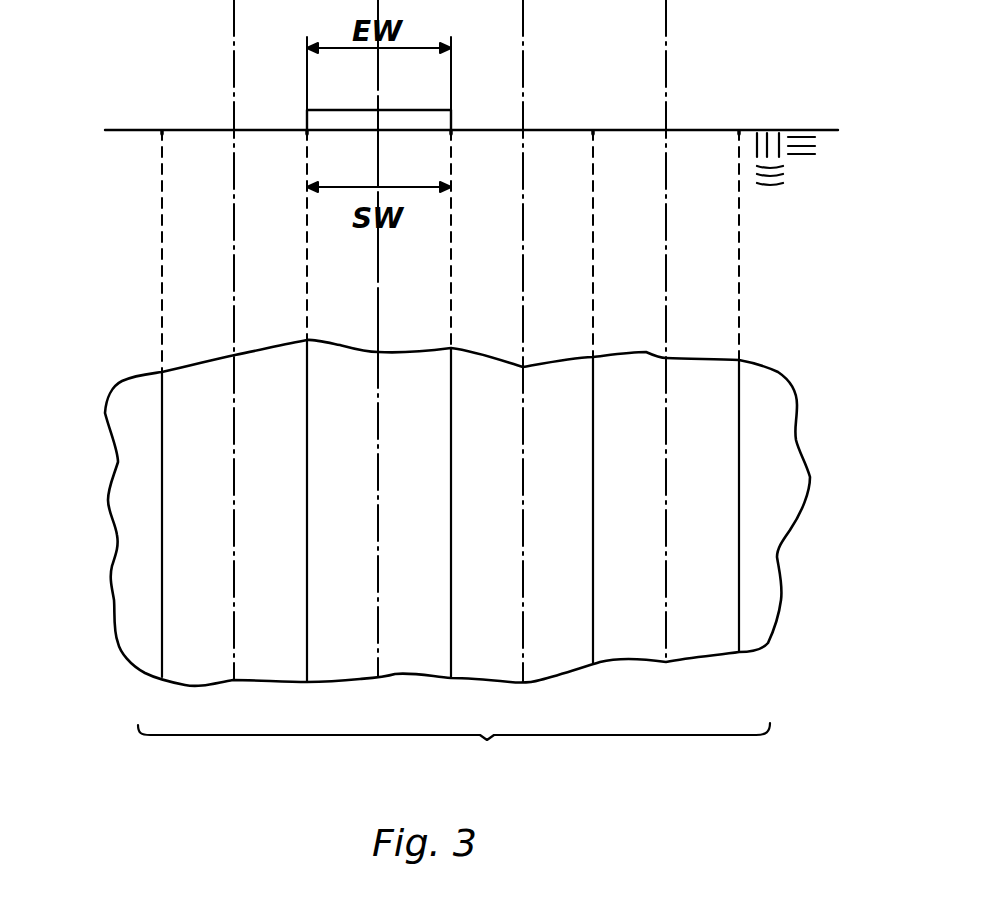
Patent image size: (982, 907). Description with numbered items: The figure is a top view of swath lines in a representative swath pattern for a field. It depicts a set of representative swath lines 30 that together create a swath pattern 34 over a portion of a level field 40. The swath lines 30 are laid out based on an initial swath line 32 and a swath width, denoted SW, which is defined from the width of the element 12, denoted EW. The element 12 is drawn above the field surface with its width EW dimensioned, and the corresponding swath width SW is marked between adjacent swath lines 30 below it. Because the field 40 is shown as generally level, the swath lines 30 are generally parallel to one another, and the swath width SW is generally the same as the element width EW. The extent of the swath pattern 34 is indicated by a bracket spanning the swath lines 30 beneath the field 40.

The element 12 is at (440, 118).
The swath lines 30 is at (451, 548).
The initial swath line 32 is at (162, 462).
The swath pattern 34 is at (454, 751).
The level field 40 is at (768, 455).